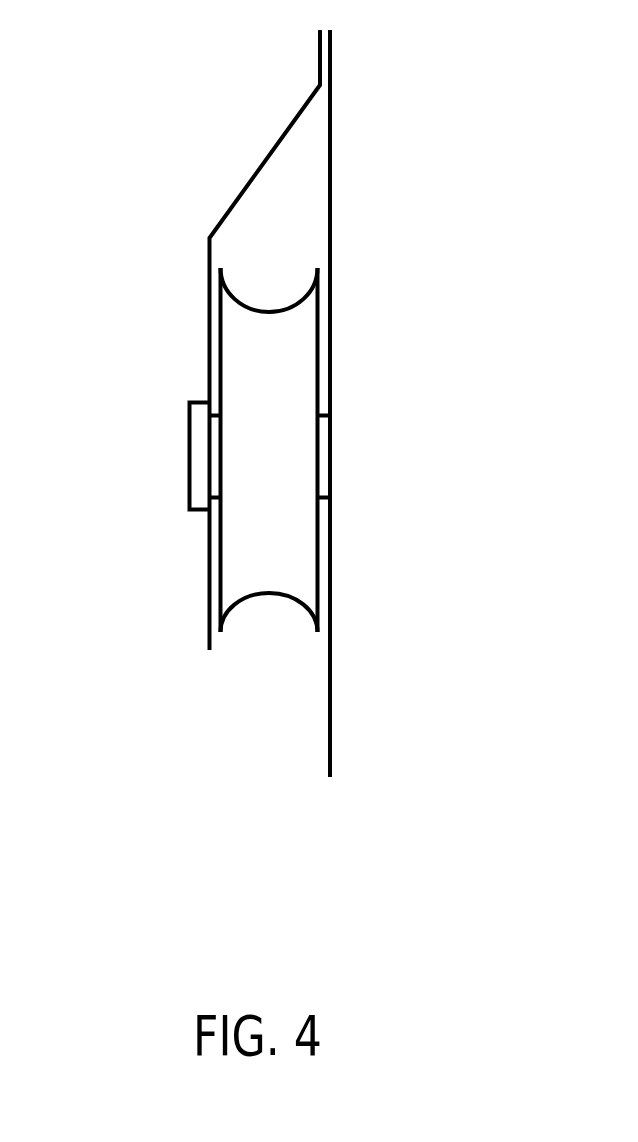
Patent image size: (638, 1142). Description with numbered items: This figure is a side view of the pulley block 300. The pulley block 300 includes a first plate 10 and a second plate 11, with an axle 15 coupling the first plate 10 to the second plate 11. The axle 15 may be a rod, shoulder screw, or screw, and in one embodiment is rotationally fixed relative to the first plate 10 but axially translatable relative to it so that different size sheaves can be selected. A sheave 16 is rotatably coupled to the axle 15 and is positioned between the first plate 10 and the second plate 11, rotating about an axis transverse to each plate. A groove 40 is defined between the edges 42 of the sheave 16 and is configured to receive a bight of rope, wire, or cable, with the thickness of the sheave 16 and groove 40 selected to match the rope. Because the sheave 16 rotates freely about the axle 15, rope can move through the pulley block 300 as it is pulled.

The pulley block 300 is at (253, 70).
The first plate 10 is at (333, 151).
The second plate 11 is at (232, 203).
The sheave 16 is at (290, 352).
The groove 40 is at (273, 307).
The edges 42 is at (318, 637).
The axle 15 is at (200, 452).